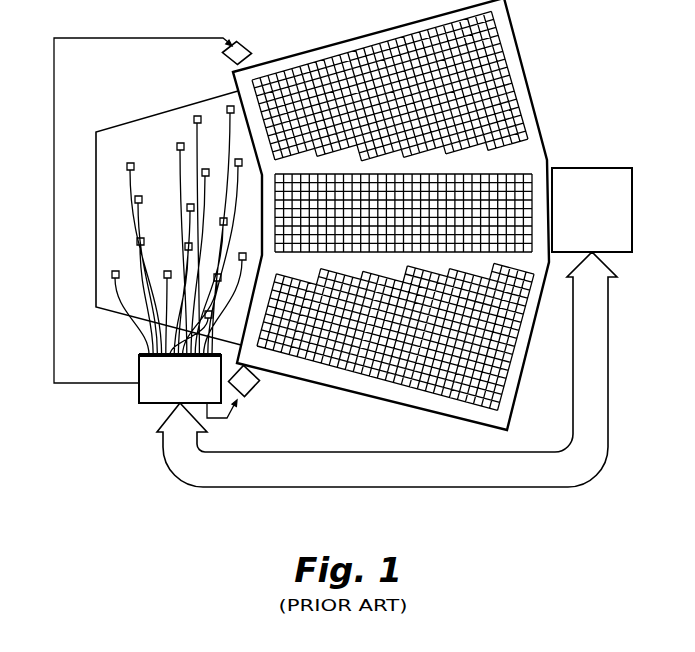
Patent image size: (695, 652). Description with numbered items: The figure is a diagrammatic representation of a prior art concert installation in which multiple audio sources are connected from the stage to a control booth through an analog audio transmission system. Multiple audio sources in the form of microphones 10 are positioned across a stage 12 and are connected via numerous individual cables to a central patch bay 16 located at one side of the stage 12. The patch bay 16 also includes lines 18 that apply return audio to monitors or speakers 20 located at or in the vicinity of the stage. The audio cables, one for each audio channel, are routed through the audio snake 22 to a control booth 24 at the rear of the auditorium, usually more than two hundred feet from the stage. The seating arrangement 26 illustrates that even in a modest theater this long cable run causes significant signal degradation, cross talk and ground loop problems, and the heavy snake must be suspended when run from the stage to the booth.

The microphones 10 is at (176, 147).
The stage 12 is at (118, 222).
The central patch bay 16 is at (187, 393).
The lines 18 is at (54, 238).
The monitors or speakers 20 is at (241, 41).
The audio snake 22 is at (543, 476).
The control booth 24 is at (598, 220).
The seating arrangement 26 is at (500, 57).